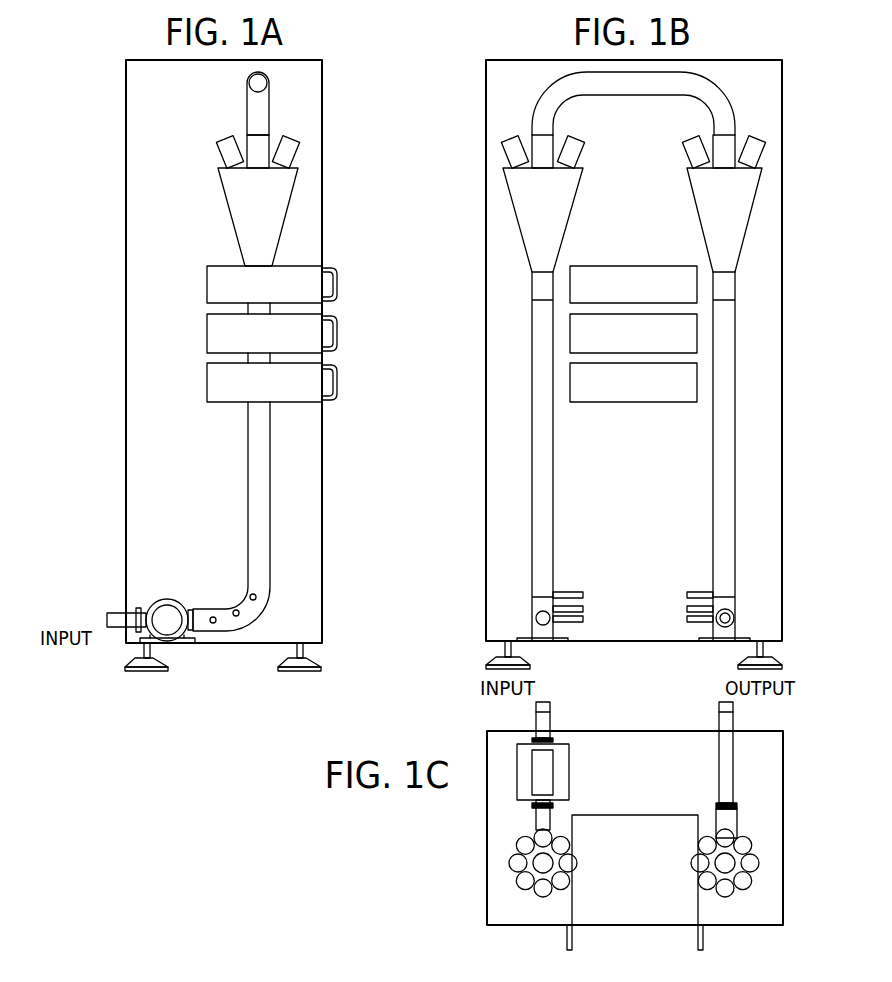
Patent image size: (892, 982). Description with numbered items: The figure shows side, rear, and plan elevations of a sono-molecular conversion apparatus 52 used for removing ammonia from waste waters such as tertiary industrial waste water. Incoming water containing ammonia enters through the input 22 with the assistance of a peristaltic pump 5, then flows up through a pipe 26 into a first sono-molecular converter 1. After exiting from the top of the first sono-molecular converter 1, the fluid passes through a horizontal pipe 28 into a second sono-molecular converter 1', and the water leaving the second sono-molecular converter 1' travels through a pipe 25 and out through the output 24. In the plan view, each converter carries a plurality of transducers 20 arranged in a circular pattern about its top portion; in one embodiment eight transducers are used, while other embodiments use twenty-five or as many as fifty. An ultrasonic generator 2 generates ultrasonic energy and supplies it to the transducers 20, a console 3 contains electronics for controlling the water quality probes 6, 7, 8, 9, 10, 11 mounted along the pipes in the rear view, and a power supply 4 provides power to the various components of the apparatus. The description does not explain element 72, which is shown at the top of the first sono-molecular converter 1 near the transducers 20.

In FIG. 1A, the first sono-molecular converter 1 is at (258, 217).
In FIG. 1B, the first sono-molecular converter 1 is at (543, 220).
In FIG. 1C, the first sono-molecular converter 1 is at (634, 861).
In FIG. 1B, the second sono-molecular converter 1' is at (724, 220).
In FIG. 1A, the ultrasonic generator 2 is at (272, 284).
In FIG. 1B, the ultrasonic generator 2 is at (633, 284).
In FIG. 1C, the ultrasonic generator 2 is at (635, 882).
In FIG. 1A, the console 3 is at (272, 333).
In FIG. 1B, the console 3 is at (633, 333).
In FIG. 1A, the power supply 4 is at (272, 382).
In FIG. 1B, the power supply 4 is at (633, 382).
In FIG. 1A, the peristaltic pump 5 is at (167, 621).
In FIG. 1C, the peristaltic pump 5 is at (543, 772).
In FIG. 1B, the water quality probe 6 is at (577, 589).
In FIG. 1B, the water quality probe 7 is at (577, 608).
In FIG. 1B, the water quality probe 8 is at (577, 628).
In FIG. 1B, the water quality probe 9 is at (690, 590).
In FIG. 1B, the water quality probe 10 is at (684, 609).
In FIG. 1B, the water quality probe 11 is at (684, 628).
In FIG. 1A, the transducers 20 is at (220, 158).
In FIG. 1B, the transducers 20 is at (510, 157).
In FIG. 1C, the transducers 20 is at (524, 845).
In FIG. 1A, the input 22 is at (107, 616).
In FIG. 1B, the input 22 is at (536, 618).
In FIG. 1B, the output 24 is at (734, 615).
In FIG. 1B, the pipe 25 is at (722, 478).
In FIG. 1A, the pipe 26 is at (258, 482).
In FIG. 1B, the pipe 26 is at (548, 478).
In FIG. 1B, the horizontal pipe 28 is at (636, 88).
In FIG. 1A, the sono-molecular conversion apparatus 52 is at (114, 354).
In FIG. 1B, the sono-molecular conversion apparatus 52 is at (478, 352).
In FIG. 1C, the sono-molecular conversion apparatus 52 is at (475, 873).
In FIG. 1A, the feed tube 72 is at (272, 142).
In FIG. 1B, the feed tube 72 is at (534, 143).